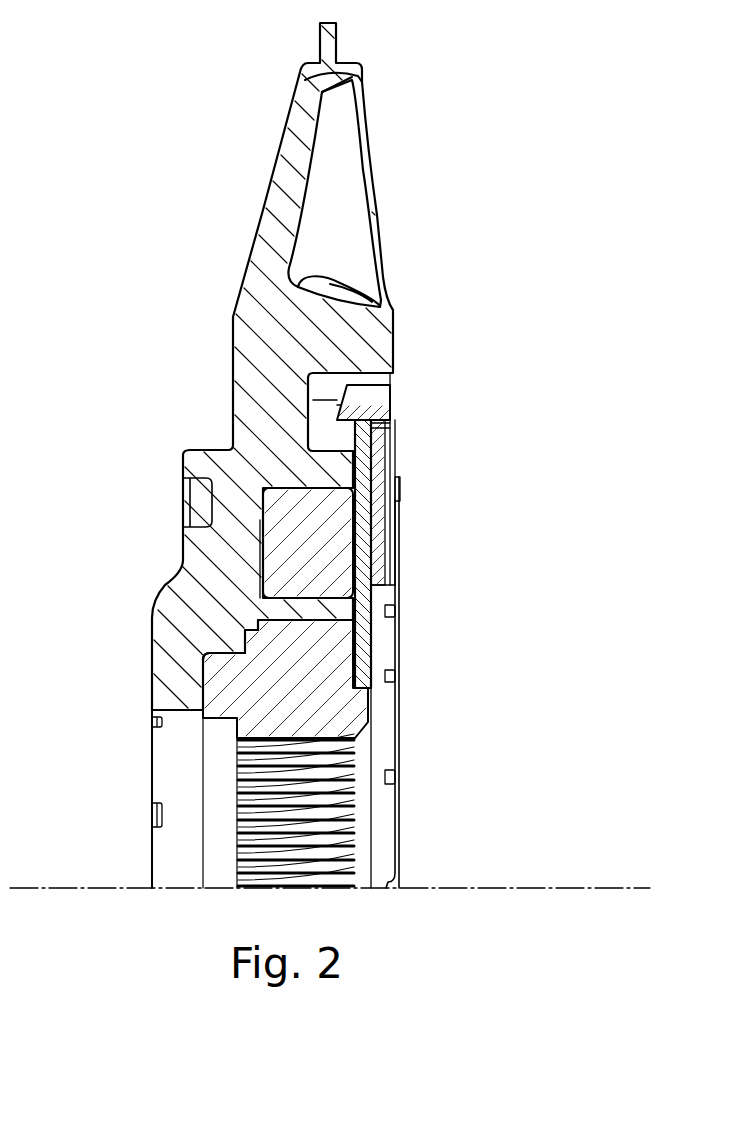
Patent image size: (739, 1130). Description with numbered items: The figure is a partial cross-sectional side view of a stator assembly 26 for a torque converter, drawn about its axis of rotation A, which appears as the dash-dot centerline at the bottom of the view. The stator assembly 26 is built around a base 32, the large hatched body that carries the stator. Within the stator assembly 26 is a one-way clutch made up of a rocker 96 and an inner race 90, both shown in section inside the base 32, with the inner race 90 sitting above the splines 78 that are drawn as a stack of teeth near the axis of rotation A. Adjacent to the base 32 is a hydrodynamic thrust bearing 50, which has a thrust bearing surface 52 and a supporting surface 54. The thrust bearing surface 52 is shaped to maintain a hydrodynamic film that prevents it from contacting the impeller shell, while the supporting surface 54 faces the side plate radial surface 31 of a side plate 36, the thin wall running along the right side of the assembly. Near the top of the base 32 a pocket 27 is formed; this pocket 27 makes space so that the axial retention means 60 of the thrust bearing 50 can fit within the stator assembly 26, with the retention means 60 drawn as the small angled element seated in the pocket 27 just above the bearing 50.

The stator assembly 26 is at (462, 130).
The pocket 27 is at (340, 420).
The side plate radial surface 31 is at (379, 574).
The base 32 is at (272, 366).
The side plate 36 is at (370, 650).
The thrust bearing 50 is at (392, 432).
The thrust bearing surface 52 is at (398, 504).
The supporting surface 54 is at (378, 540).
The axial retention means 60 is at (385, 395).
The splines 78 is at (238, 758).
The inner race 90 is at (285, 679).
The rocker 96 is at (306, 543).
The axis of rotation A is at (620, 888).